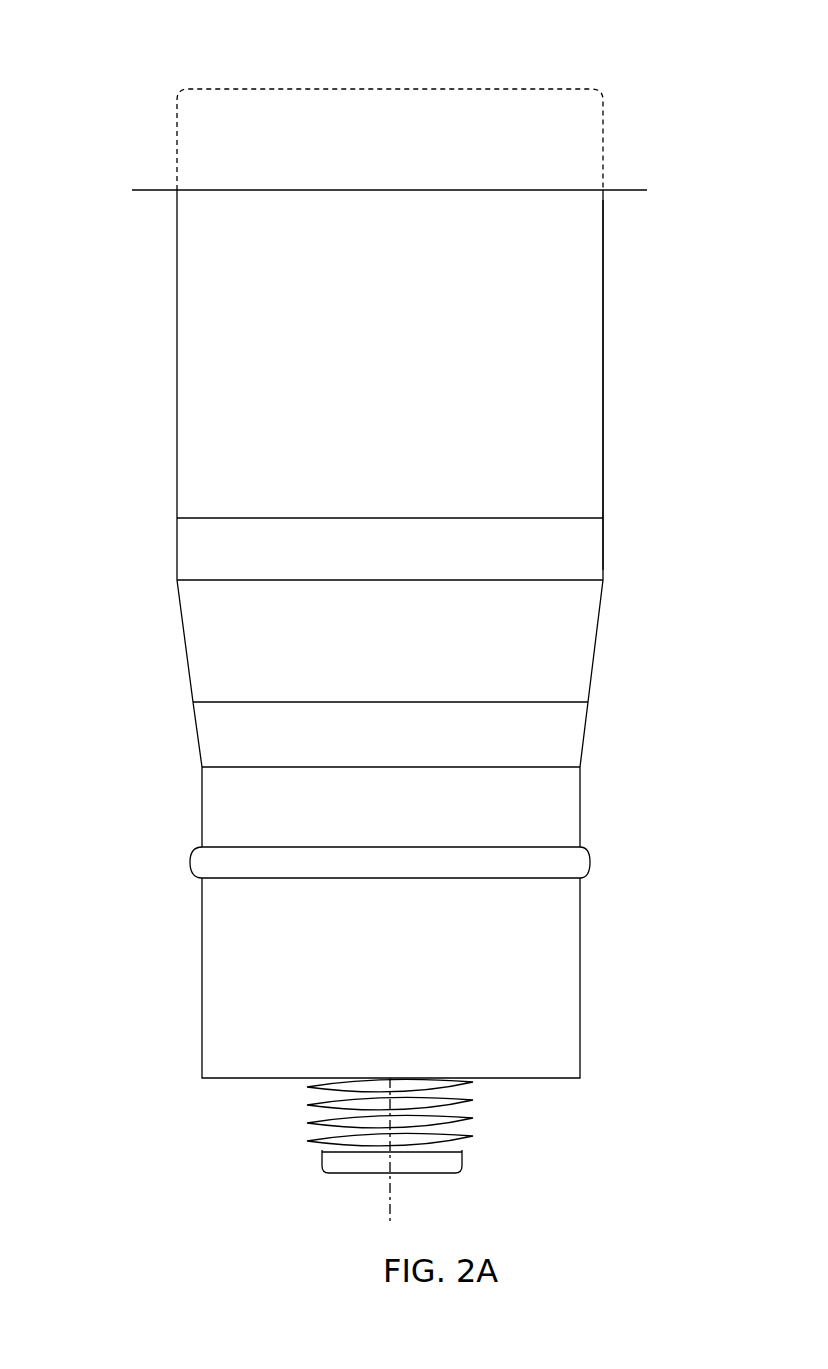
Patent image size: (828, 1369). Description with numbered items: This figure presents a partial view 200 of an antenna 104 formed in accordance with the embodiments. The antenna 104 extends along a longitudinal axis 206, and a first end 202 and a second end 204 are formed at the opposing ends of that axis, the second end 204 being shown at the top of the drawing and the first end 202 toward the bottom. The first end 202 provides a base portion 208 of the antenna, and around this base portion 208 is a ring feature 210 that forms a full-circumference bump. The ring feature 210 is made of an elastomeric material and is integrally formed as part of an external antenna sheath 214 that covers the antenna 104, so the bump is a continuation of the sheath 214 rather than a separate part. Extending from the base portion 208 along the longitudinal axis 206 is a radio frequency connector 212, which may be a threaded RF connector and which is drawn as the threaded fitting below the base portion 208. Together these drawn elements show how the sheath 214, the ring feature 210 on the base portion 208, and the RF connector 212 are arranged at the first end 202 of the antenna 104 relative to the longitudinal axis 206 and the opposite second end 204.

The partial view 200 is at (146, 110).
The second end 204 is at (603, 100).
The antenna 104 is at (146, 420).
The external antenna sheath 214 is at (603, 438).
The ring feature 210 is at (590, 846).
The base portion 208 is at (165, 767).
The first end 202 is at (580, 1047).
The radio frequency (RF) connector 212 is at (470, 1140).
The longitudinal axis 206 is at (392, 1200).